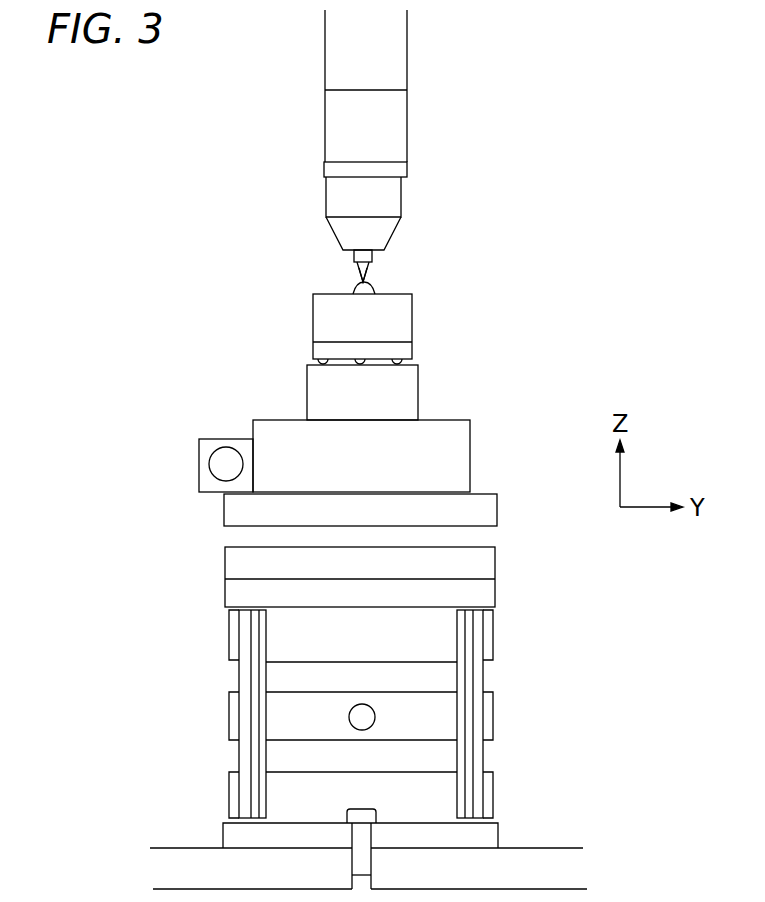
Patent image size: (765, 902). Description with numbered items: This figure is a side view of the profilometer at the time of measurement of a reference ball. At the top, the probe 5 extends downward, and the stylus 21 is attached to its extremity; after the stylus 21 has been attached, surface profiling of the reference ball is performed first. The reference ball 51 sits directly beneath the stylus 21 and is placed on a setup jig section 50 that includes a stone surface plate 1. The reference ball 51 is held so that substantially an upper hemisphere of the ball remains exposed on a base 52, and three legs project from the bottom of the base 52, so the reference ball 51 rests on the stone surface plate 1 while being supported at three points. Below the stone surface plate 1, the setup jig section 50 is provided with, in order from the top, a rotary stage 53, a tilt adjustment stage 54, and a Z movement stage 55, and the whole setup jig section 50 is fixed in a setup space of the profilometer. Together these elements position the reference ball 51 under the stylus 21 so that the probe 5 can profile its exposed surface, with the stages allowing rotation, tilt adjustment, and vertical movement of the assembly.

The stone surface plate 1 is at (413, 390).
The probe 5 is at (385, 236).
The stylus 21 is at (360, 280).
The setup jig section 50 is at (487, 457).
The reference ball 51 is at (372, 291).
The base 52 is at (413, 320).
The rotary stage 53 is at (258, 431).
The tilt adjustment stage 54 is at (226, 514).
The Z movement stage 55 is at (228, 593).